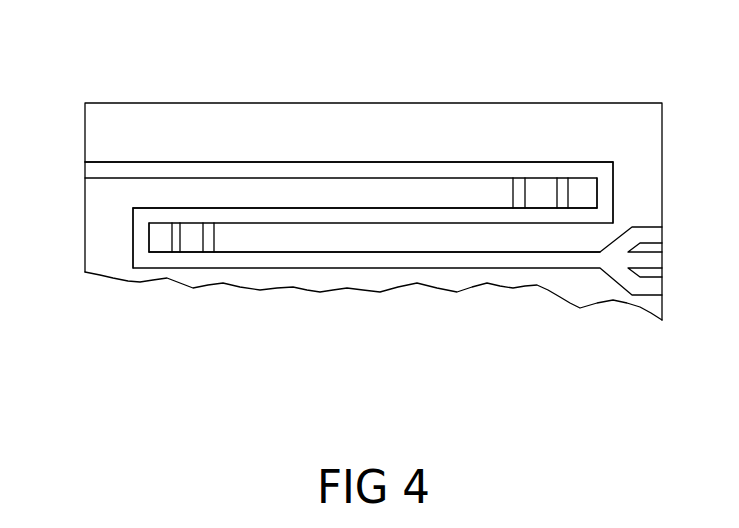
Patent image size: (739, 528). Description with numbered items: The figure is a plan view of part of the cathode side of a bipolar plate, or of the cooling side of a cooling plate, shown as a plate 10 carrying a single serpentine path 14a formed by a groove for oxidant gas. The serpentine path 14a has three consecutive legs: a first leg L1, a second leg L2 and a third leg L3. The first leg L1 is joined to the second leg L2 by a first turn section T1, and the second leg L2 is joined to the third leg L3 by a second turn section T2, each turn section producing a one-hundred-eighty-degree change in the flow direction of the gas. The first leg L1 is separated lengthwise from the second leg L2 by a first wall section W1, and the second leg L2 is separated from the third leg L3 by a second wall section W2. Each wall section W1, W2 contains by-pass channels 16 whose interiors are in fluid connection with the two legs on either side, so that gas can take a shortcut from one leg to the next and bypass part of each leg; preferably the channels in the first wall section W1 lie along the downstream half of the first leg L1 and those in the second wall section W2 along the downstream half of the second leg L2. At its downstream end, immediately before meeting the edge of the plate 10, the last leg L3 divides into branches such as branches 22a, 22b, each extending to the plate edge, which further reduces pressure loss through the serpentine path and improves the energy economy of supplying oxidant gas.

The plate 10 is at (585, 72).
The serpentine path 14a is at (100, 258).
The by-pass channel 16 is at (518, 193).
The branch 22a is at (642, 233).
The branch 22b is at (640, 286).
The first turn section T1 is at (643, 196).
The second turn section T2 is at (100, 230).
The first leg L1 is at (238, 168).
The second leg L2 is at (267, 213).
The third leg L3 is at (245, 257).
The first wall section W1 is at (355, 193).
The second wall section W2 is at (435, 242).